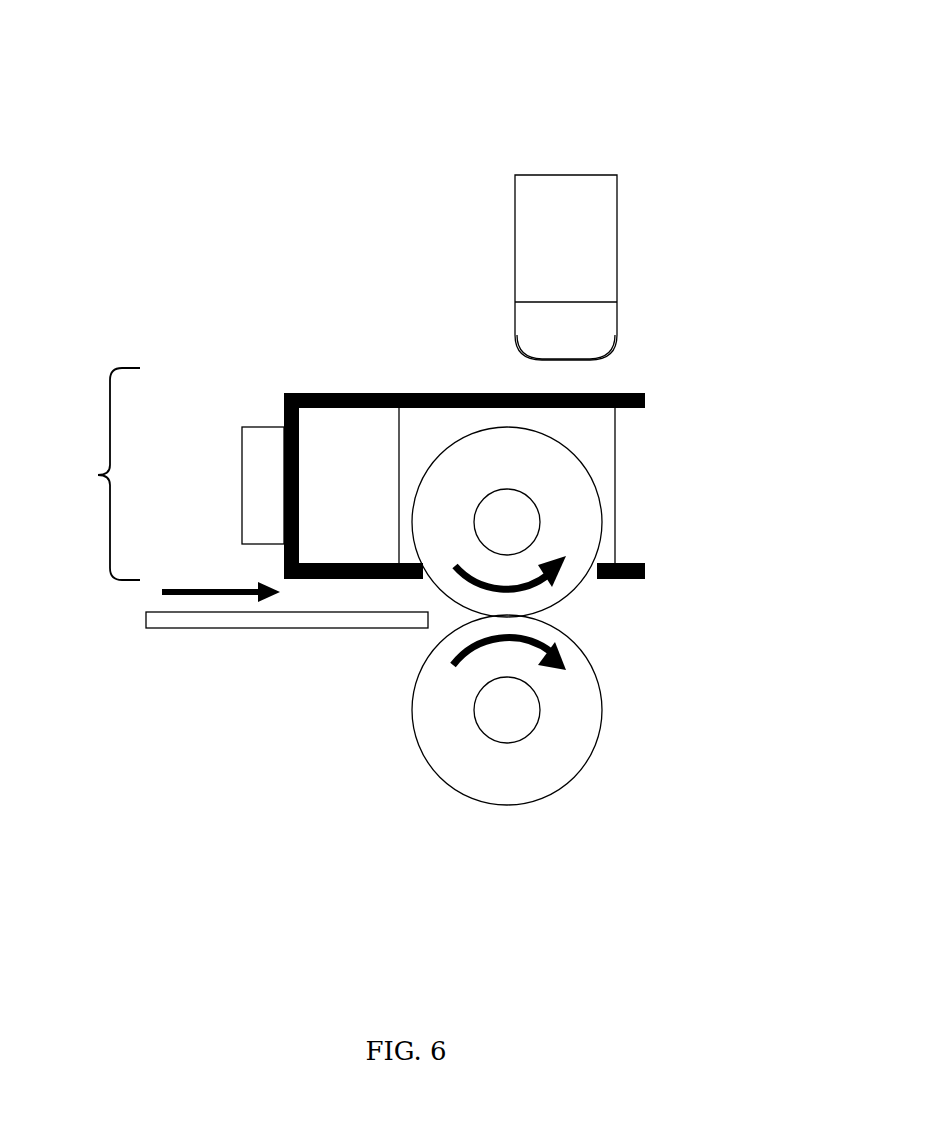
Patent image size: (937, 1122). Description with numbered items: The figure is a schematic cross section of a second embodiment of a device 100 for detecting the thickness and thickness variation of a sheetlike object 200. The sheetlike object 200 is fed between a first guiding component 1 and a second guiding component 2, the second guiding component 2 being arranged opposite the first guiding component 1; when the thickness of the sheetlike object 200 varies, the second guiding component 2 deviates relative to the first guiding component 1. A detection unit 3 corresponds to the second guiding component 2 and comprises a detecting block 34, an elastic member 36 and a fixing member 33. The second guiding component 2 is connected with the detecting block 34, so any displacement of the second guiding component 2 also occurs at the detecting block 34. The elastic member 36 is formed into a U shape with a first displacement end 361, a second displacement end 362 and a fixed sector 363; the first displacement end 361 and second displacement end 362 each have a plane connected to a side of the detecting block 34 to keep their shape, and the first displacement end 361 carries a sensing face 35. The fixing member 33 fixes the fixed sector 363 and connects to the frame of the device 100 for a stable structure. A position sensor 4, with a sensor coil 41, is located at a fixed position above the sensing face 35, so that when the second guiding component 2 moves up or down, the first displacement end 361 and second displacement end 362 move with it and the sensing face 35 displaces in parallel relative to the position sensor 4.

The device for detecting thickness and thickness variation 100 is at (230, 136).
The first guiding component 1 is at (572, 707).
The second guiding component 2 is at (574, 573).
The detection unit 3 is at (87, 474).
The fixing member 33 is at (253, 460).
The detecting block 34 is at (608, 487).
The sensing face 35 is at (568, 398).
The elastic member 36 is at (335, 393).
The first displacement end 361 is at (643, 400).
The second displacement end 362 is at (640, 577).
The fixed sector 363 is at (284, 515).
The position sensor 4 is at (598, 220).
The sensor coil 41 is at (596, 358).
The sheetlike object 200 is at (170, 626).